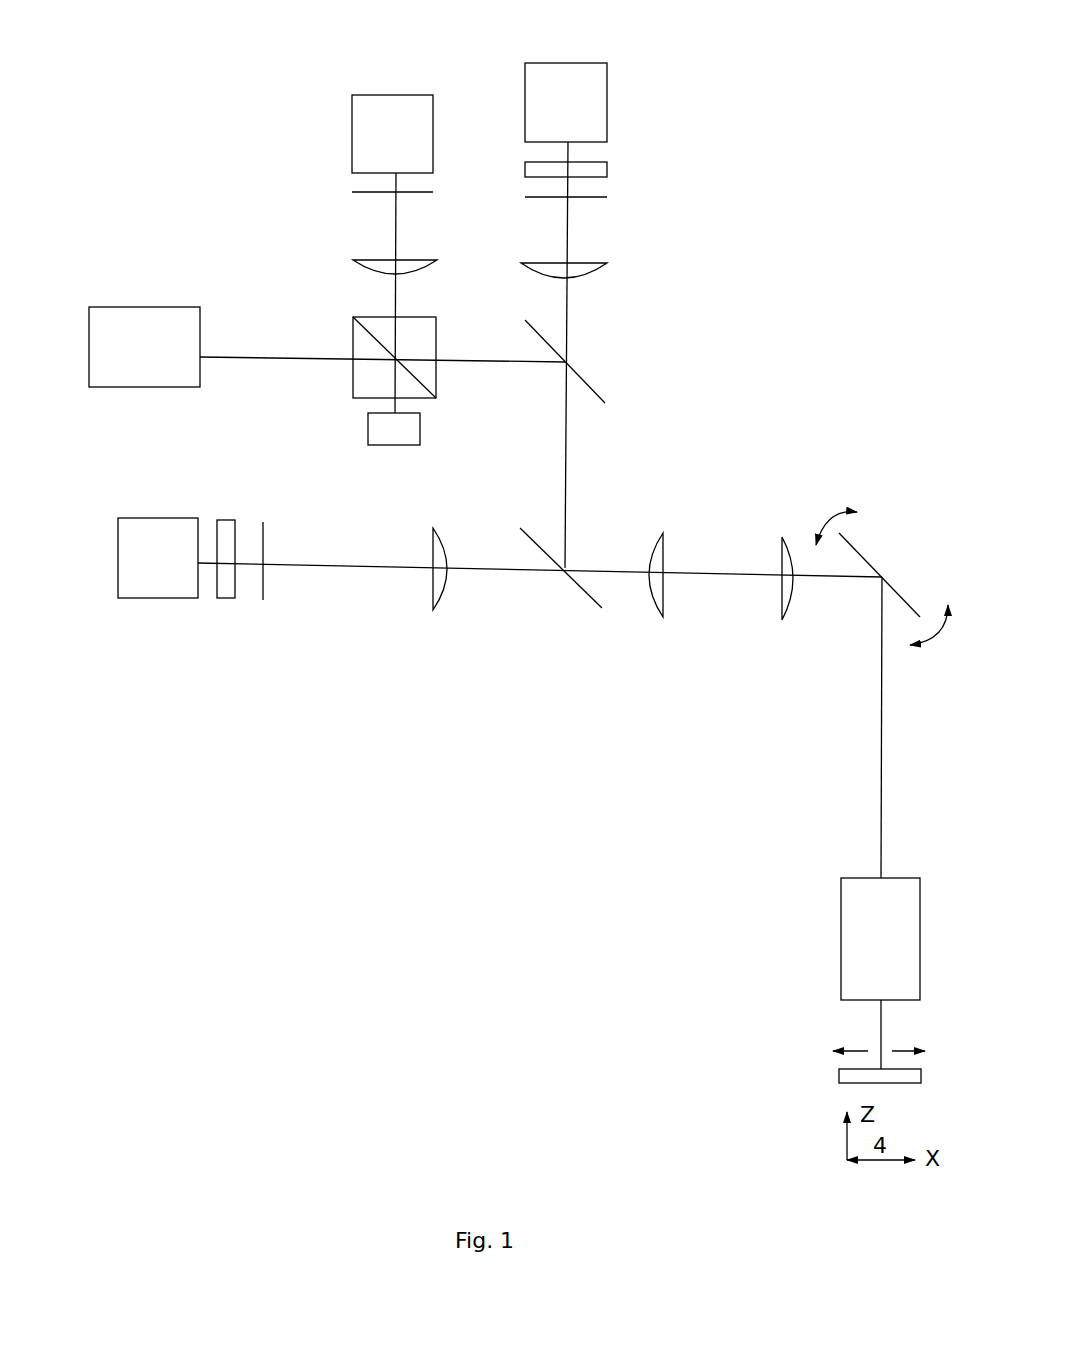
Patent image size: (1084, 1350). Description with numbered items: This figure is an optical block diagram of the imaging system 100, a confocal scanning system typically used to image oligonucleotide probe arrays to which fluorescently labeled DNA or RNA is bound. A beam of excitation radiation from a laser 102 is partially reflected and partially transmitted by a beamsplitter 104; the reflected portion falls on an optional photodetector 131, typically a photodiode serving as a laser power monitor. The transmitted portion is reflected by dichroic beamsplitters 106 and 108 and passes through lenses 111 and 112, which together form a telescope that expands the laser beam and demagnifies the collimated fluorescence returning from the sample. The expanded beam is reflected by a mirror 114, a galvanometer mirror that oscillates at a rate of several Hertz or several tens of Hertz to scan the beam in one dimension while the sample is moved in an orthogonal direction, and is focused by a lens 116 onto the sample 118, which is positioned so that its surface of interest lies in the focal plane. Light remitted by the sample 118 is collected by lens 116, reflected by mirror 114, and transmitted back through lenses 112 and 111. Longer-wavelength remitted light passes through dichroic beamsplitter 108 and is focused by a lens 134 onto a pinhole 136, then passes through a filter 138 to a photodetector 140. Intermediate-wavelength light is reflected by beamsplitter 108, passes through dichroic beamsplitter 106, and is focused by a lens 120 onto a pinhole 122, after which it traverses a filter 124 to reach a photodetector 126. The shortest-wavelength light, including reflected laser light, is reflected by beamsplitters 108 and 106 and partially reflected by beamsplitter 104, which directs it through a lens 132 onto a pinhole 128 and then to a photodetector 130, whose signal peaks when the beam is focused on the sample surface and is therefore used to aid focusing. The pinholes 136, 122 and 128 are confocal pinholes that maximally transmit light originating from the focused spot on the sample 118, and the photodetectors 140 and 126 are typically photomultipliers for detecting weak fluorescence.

The imaging system 100 is at (737, 290).
The laser 102 is at (159, 300).
The beamsplitter 104 is at (350, 332).
The dichroic beamsplitter 106 is at (614, 413).
The dichroic beamsplitter 108 is at (594, 622).
The lens 111 is at (675, 625).
The lens 112 is at (790, 625).
The mirror 114 is at (897, 576).
The lens 116 is at (823, 942).
The sample 118 is at (823, 1072).
The lens 120 is at (615, 280).
The pinhole 122 is at (615, 205).
The filter 124 is at (615, 157).
The photodetector 126 is at (618, 67).
The pinhole 128 is at (350, 183).
The photodetector 130 is at (350, 80).
The photodetector 131 is at (357, 438).
The lens 132 is at (350, 258).
The lens 134 is at (441, 618).
The pinhole 136 is at (282, 615).
The filter 138 is at (224, 615).
The photodetector 140 is at (145, 615).